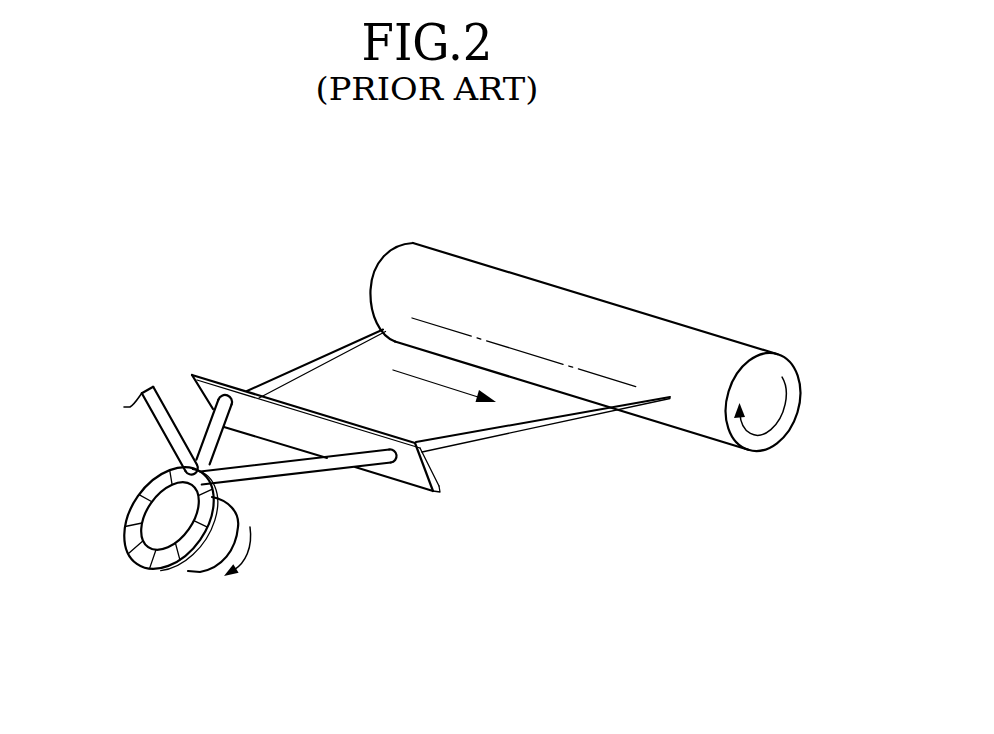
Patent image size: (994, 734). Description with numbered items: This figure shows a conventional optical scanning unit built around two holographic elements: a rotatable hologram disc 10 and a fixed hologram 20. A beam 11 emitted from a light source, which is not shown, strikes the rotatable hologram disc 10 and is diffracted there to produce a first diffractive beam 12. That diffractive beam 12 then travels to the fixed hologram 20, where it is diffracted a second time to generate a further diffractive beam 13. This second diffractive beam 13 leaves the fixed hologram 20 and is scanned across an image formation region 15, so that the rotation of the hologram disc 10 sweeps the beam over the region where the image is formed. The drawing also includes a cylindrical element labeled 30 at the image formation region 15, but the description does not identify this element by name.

The rotatable hologram disc 10 is at (155, 562).
The beam 11 is at (150, 417).
The diffractive beam 12 is at (300, 467).
The diffractive beam 13 is at (312, 360).
The image formation region 15 is at (470, 335).
The fixed hologram 20 is at (441, 487).
The roller 30 is at (784, 362).